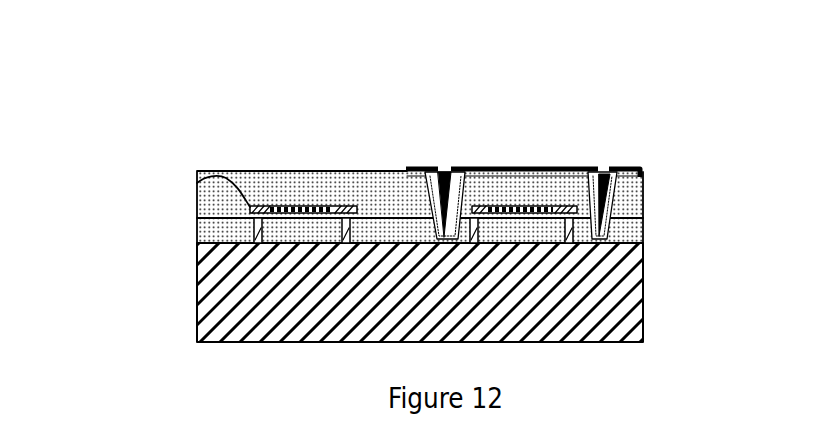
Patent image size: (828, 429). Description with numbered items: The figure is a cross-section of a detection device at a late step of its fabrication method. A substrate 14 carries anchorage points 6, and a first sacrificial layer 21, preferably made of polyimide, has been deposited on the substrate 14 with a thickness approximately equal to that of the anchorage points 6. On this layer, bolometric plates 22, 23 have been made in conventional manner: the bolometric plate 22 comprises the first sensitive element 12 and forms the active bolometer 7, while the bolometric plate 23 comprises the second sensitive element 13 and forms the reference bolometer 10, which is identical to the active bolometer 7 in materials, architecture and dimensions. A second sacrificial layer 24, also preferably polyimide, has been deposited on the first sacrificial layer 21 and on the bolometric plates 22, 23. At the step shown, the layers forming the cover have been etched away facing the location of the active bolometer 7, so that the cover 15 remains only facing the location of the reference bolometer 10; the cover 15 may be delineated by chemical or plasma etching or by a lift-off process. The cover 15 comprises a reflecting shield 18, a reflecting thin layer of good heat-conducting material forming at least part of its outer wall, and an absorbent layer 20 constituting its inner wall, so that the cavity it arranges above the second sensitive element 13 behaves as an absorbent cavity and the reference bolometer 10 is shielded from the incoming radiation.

The anchorage points 6 is at (250, 227).
The active bolometer 7 is at (322, 172).
The reference bolometer 10 is at (532, 172).
The first sensitive element 12 is at (297, 204).
The second sensitive element 13 is at (488, 167).
The substrate 14 is at (600, 290).
The cover 15 is at (645, 146).
The reflecting shield 18 is at (475, 167).
The absorbent layer 20 is at (443, 165).
The first sacrificial layer 21 is at (643, 227).
The bolometric plate 22 is at (197, 183).
The bolometric plate 23 is at (567, 168).
The second sacrificial layer 24 is at (643, 193).